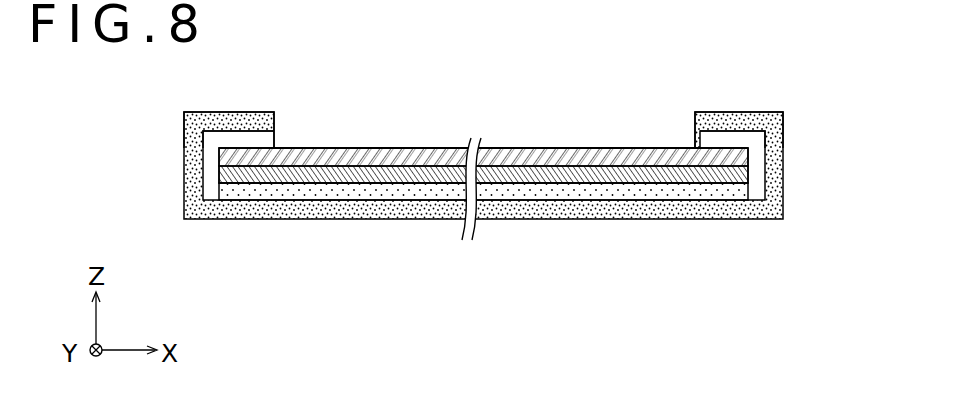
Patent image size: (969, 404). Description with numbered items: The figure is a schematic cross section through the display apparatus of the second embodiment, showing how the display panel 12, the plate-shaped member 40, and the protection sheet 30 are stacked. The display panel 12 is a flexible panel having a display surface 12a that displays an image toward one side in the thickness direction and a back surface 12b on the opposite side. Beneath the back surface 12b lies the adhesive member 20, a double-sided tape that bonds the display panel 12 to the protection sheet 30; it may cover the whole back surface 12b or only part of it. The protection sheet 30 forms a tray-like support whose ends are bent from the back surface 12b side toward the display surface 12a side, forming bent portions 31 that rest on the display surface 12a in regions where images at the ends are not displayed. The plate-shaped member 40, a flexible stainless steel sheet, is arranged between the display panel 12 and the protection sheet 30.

The display panel 12 is at (497, 156).
The display surface 12a is at (346, 146).
The back surface 12b is at (343, 165).
The adhesive member 20 is at (615, 193).
The protection sheet 30 is at (572, 208).
The bent portions 31 is at (232, 123).
The plate-shaped member 40 is at (590, 158).